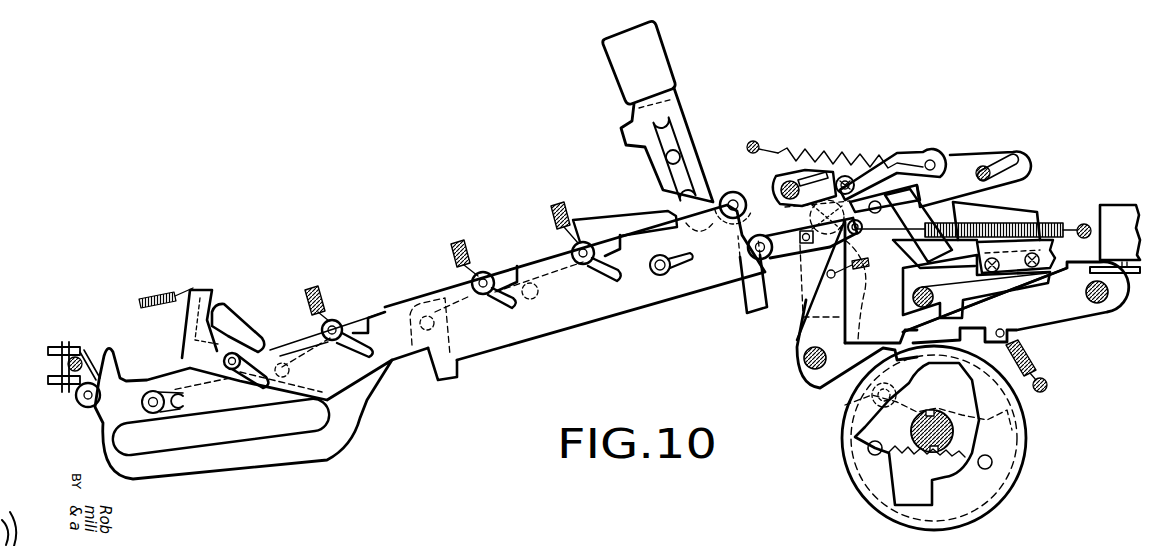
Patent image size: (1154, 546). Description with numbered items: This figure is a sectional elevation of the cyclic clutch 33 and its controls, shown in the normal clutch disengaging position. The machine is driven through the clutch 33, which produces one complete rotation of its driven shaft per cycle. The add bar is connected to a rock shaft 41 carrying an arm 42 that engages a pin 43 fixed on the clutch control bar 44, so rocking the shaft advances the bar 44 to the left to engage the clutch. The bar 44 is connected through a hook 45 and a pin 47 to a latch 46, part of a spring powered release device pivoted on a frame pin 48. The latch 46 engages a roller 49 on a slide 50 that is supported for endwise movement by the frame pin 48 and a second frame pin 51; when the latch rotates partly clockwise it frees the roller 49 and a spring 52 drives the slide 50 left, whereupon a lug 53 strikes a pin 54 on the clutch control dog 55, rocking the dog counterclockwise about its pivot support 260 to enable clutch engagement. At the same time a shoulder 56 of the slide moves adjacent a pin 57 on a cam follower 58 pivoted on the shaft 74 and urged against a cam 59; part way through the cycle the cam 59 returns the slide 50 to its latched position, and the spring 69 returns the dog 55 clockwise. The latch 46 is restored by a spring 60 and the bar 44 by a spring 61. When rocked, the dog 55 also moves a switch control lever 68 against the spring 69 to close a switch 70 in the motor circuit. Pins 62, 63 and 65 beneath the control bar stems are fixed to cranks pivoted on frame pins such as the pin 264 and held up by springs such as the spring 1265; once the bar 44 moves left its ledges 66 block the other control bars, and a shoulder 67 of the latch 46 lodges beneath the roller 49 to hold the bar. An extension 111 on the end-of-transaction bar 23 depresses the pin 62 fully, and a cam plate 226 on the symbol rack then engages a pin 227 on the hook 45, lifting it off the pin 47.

The end-of-transaction bar 23 is at (664, 61).
The cyclic clutch 33 is at (1005, 398).
The rock shaft 41 is at (80, 352).
The arm 42 is at (100, 387).
The pin 43 is at (77, 397).
The clutch control bar 44 is at (565, 330).
The hook 45 is at (780, 258).
The latch 46 is at (760, 193).
The pin 47 is at (830, 240).
The frame pin 48 is at (790, 181).
The roller 49 is at (858, 180).
The slide 50 is at (915, 157).
The frame pin 51 is at (983, 167).
The spring 52 is at (812, 150).
The lug 53 is at (870, 266).
The pin 54 is at (784, 208).
The clutch control dog 55 is at (800, 345).
The shoulder 56 is at (948, 160).
The pin 57 is at (921, 195).
The cam follower 58 is at (902, 316).
The cam 59 is at (842, 418).
The spring 60 is at (866, 270).
The spring 61 is at (1052, 224).
The pin 62 is at (585, 266).
The pin 63 is at (487, 296).
The pin 65 is at (235, 372).
The ledges 66 is at (258, 350).
The shoulder 67 is at (845, 176).
The switch control lever 68 is at (1053, 312).
The spring 69 is at (1028, 356).
The switch 70 is at (1118, 210).
The shaft 74 is at (935, 296).
The extension 111 is at (587, 220).
The cam plate 226 is at (966, 207).
The pin 227 is at (878, 201).
The pivot support 260 is at (806, 362).
The frame pin 264 is at (264, 370).
The spring 1265 is at (338, 281).